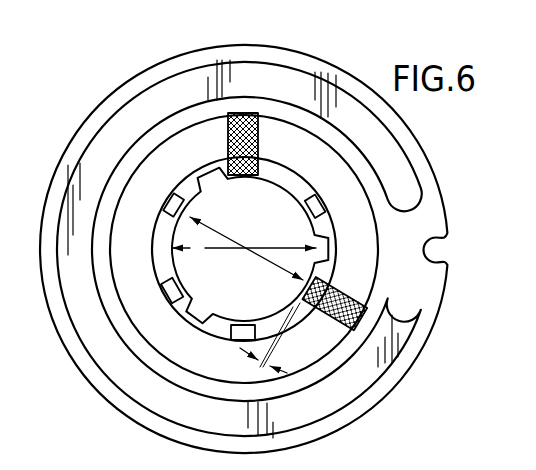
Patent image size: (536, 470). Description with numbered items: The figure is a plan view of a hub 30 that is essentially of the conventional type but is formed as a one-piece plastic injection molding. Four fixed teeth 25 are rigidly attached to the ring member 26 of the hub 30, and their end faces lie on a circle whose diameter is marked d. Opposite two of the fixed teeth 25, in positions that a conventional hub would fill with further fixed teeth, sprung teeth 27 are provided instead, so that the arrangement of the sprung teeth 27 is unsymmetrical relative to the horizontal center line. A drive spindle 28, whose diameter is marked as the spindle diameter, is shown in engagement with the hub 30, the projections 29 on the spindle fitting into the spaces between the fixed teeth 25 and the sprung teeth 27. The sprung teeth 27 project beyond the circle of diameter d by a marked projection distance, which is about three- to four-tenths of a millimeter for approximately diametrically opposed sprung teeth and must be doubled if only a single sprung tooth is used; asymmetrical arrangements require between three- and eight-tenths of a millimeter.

The fixed teeth 25 is at (172, 282).
The ring member 26 is at (122, 88).
The sprung teeth 27 is at (262, 131).
The drive spindle 28 is at (274, 222).
The projections 29 is at (184, 318).
The hub 30 is at (68, 112).